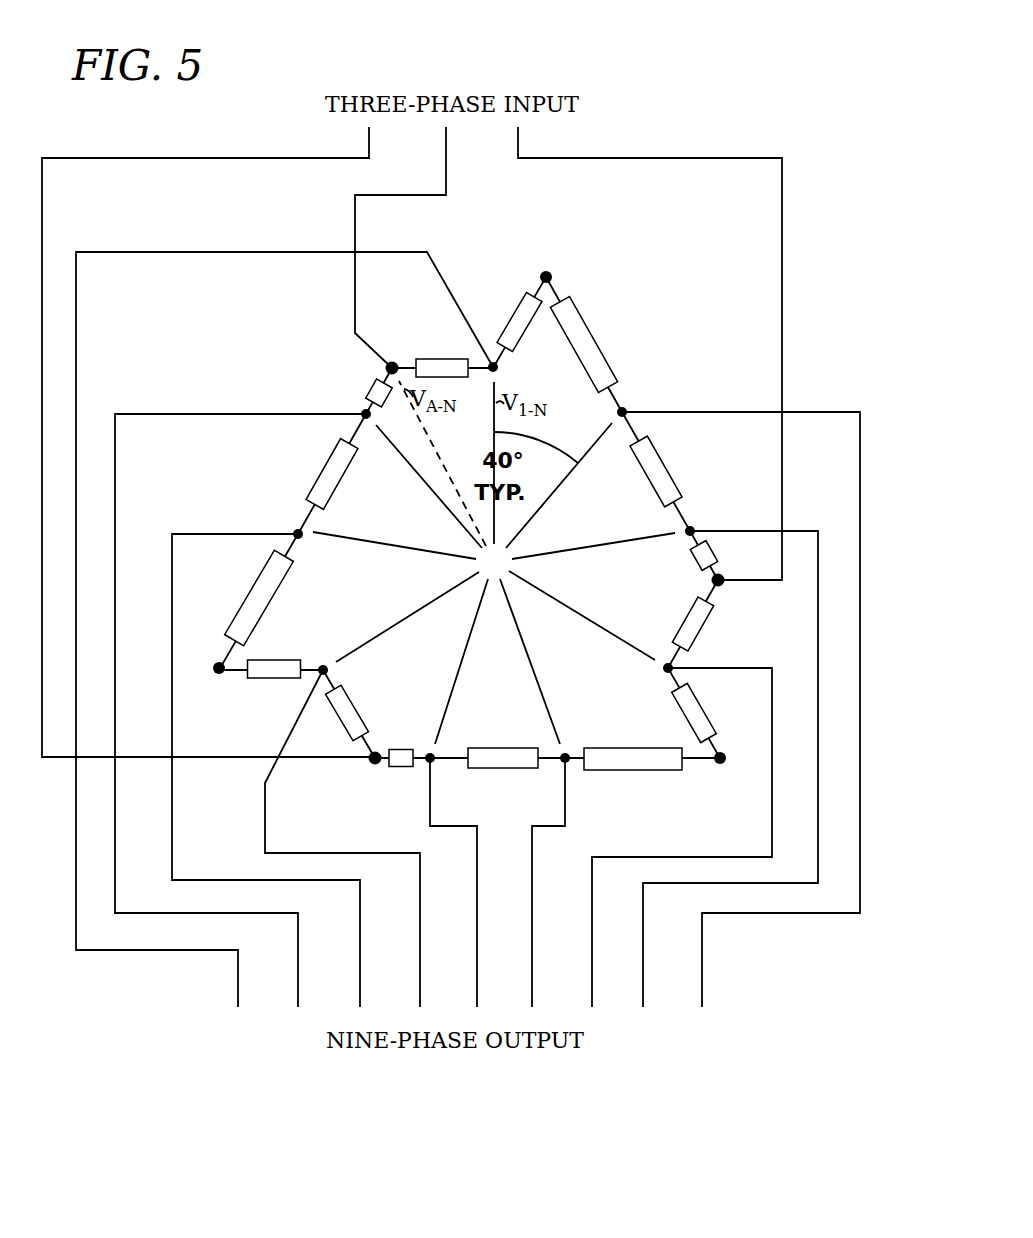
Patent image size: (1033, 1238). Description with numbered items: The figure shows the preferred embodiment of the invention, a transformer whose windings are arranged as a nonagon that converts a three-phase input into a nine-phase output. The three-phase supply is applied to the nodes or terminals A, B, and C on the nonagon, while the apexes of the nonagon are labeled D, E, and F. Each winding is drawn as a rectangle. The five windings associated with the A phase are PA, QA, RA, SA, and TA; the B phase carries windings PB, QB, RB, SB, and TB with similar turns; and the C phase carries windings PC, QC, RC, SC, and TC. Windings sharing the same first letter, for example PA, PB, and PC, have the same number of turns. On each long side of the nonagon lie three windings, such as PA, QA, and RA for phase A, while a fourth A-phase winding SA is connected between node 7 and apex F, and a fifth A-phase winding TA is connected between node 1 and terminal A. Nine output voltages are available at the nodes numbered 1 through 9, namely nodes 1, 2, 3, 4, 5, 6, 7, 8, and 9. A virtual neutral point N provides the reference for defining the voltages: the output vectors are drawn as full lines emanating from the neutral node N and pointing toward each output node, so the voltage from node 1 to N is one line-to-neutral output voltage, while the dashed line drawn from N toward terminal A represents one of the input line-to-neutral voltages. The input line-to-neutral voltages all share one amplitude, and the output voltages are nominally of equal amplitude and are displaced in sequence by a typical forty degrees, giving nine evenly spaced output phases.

The output node 1 is at (496, 370).
The output node 2 is at (625, 410).
The output node 3 is at (692, 529).
The output node 4 is at (671, 670).
The output node 5 is at (567, 756).
The output node 6 is at (431, 755).
The output node 7 is at (326, 668).
The output node 8 is at (301, 533).
The output node 9 is at (369, 416).
The input terminal A is at (396, 362).
The input terminal B is at (721, 583).
The input terminal C is at (373, 761).
The apex of the nonagon D is at (548, 274).
The apex of the nonagon E is at (721, 761).
The apex of the nonagon F is at (217, 671).
The virtual neutral point N is at (495, 569).
The winding TA is at (437, 359).
The winding SB is at (513, 313).
The winding PC is at (598, 326).
The winding QC is at (670, 459).
The winding RC is at (713, 556).
The winding TB is at (705, 627).
The winding SC is at (705, 716).
The winding PA is at (640, 770).
The winding QA is at (498, 768).
The winding RA is at (401, 767).
The winding TC is at (338, 716).
The winding SA is at (281, 678).
The winding PB is at (246, 592).
The winding QB is at (321, 468).
The winding RB is at (371, 386).